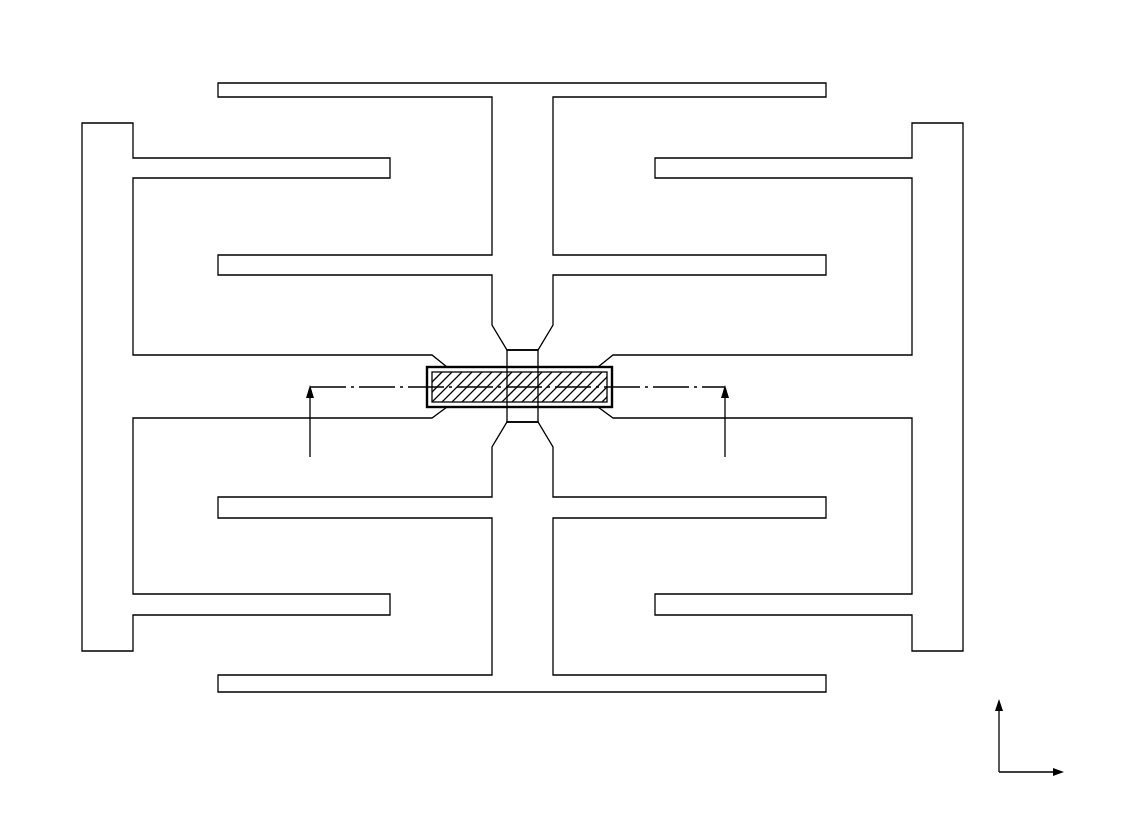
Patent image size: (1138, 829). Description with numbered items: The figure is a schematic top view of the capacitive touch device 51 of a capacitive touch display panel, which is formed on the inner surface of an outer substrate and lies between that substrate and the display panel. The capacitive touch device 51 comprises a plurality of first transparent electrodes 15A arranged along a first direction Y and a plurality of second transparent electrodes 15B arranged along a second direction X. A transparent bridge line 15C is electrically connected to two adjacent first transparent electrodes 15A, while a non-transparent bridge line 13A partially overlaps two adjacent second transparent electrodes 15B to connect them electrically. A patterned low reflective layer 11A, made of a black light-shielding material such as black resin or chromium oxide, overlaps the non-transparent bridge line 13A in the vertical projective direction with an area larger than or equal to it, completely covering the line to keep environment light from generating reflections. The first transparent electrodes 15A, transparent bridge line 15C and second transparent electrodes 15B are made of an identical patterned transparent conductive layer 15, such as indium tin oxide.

The capacitive touch device 51 is at (1025, 103).
The patterned transparent conductive layer 15 is at (528, 392).
The first transparent electrode 15A is at (535, 230).
The second transparent electrode 15B is at (105, 640).
The transparent bridge line 15C is at (533, 358).
The patterned low reflective layer 11A is at (583, 405).
The non-transparent bridge line 13A is at (556, 402).